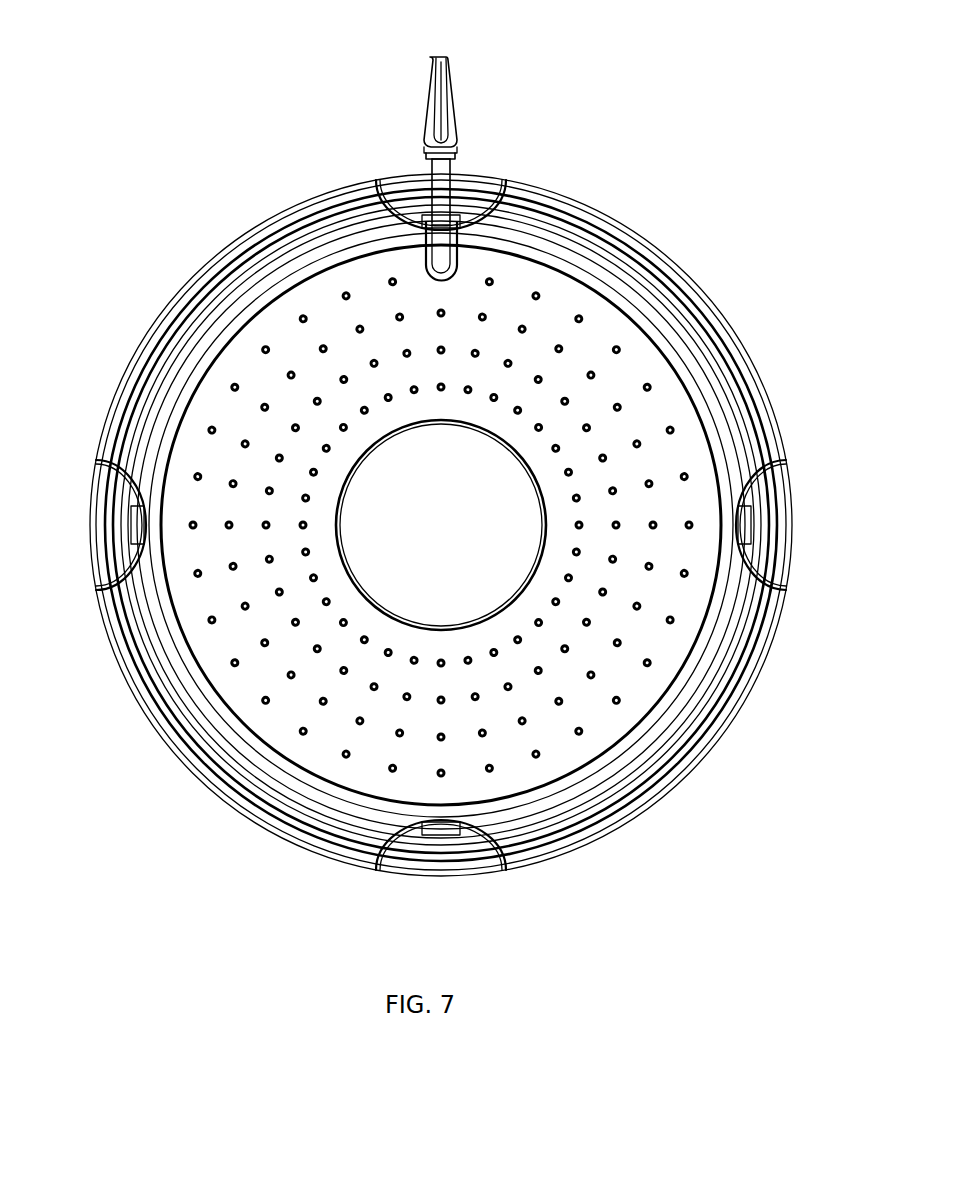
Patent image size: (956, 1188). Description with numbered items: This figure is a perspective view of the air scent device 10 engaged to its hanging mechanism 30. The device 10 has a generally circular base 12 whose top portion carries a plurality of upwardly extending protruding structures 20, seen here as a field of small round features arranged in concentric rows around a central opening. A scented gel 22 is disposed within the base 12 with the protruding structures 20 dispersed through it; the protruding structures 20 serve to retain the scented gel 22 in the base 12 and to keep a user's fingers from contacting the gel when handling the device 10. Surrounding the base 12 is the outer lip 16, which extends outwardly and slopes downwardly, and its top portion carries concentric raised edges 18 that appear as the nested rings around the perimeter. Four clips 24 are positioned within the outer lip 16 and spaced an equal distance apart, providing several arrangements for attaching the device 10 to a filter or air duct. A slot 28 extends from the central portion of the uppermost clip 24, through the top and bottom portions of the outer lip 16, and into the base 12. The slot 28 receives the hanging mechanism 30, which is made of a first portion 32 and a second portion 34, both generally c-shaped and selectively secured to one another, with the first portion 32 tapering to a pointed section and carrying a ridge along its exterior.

The air scent device 10 is at (720, 241).
The base 12 is at (675, 397).
The outer lip 16 is at (312, 778).
The concentric raised edges 18 is at (700, 712).
The protruding structures 20 is at (262, 350).
The scented gel 22 is at (252, 680).
The clip 24 is at (790, 523).
The slot 28 is at (437, 242).
The hanging mechanism 30 is at (450, 119).
The first portion 32 is at (436, 68).
The second portion 34 is at (436, 165).